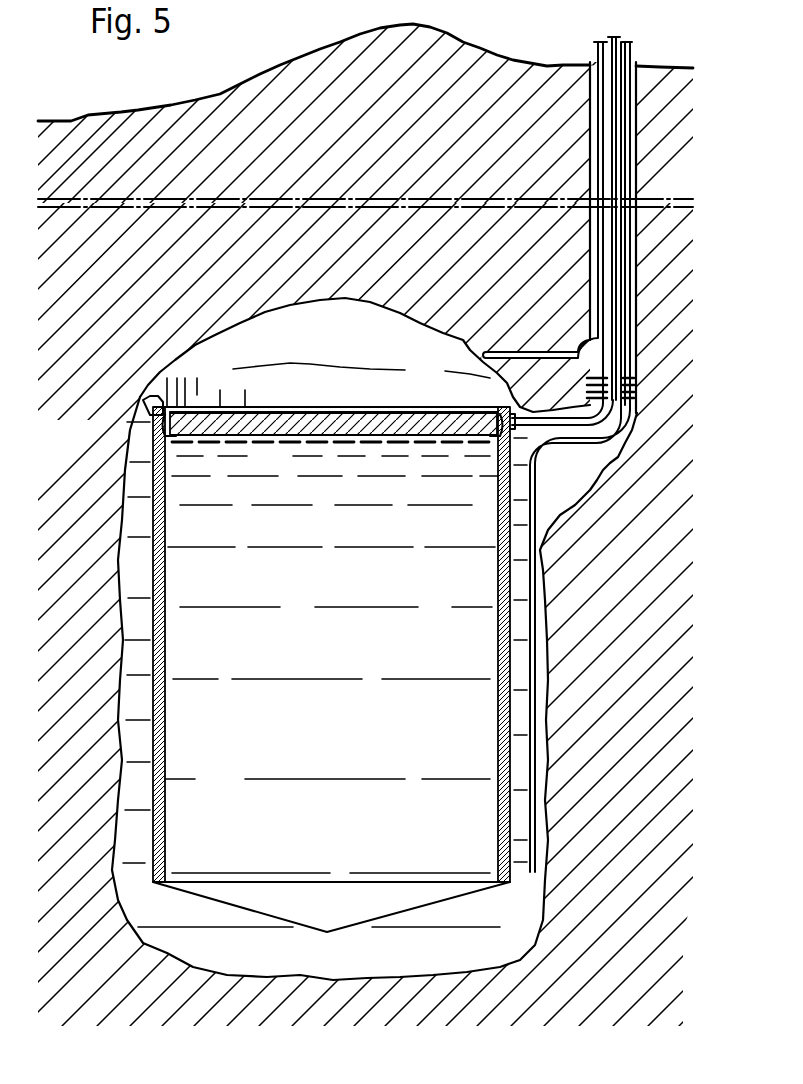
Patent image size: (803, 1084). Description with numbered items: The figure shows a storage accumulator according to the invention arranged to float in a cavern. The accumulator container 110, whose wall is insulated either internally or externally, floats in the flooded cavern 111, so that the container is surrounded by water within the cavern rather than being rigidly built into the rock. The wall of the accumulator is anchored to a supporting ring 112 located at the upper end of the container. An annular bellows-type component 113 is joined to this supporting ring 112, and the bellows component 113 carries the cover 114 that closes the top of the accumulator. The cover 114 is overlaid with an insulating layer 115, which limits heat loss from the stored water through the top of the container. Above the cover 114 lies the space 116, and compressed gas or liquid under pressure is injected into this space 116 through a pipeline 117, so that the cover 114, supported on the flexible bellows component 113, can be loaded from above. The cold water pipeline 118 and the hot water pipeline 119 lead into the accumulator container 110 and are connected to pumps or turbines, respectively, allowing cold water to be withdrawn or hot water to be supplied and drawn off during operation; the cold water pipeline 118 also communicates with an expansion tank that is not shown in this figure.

The accumulator container 110 is at (164, 741).
The flooded cavern 111 is at (115, 514).
The supporting ring 112 is at (147, 398).
The annular bellows-type component 113 is at (180, 418).
The cover 114 is at (298, 437).
The insulating layer 115 is at (417, 412).
The space above the cover 116 is at (365, 355).
The pipeline 117 is at (523, 351).
The cold water pipeline 118 is at (548, 525).
The hot water pipeline 119 is at (606, 373).